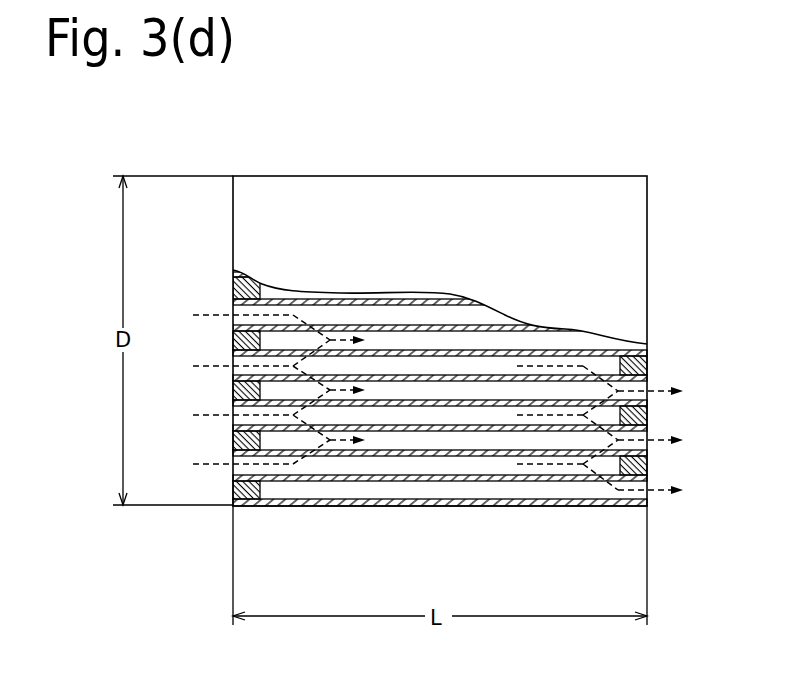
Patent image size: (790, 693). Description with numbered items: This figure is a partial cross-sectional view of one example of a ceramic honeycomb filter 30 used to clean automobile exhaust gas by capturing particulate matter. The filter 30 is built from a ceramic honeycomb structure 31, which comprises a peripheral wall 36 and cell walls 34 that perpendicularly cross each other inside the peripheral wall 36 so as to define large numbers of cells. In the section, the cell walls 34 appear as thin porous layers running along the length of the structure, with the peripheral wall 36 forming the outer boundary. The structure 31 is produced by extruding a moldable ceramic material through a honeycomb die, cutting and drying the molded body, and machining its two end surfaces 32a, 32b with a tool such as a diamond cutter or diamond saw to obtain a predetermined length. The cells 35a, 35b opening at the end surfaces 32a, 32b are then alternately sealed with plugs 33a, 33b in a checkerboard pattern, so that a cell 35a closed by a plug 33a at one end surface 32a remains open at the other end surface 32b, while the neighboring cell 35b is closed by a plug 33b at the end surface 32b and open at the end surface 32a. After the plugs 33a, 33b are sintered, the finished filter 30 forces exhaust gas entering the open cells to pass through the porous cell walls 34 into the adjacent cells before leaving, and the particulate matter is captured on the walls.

The ceramic honeycomb filter 30 is at (254, 158).
The ceramic honeycomb structure 31 is at (398, 176).
The end surface 32a is at (231, 467).
The end surface 32b is at (648, 498).
The plug 33a is at (233, 443).
The plug 33b is at (648, 459).
The cell wall 34 is at (393, 481).
The cell 35a is at (445, 440).
The cell 35b is at (514, 466).
The peripheral wall 36 is at (305, 506).